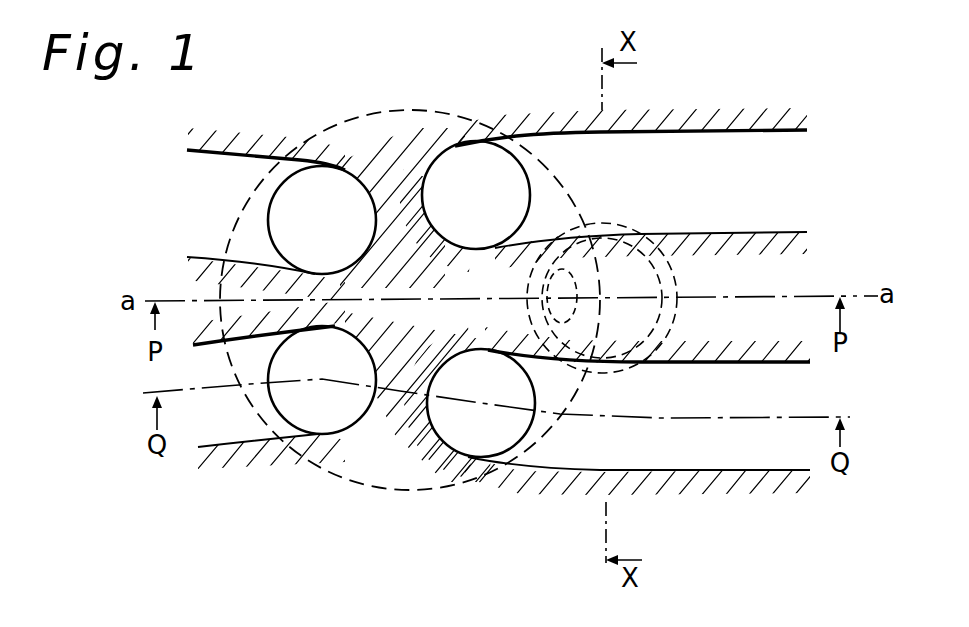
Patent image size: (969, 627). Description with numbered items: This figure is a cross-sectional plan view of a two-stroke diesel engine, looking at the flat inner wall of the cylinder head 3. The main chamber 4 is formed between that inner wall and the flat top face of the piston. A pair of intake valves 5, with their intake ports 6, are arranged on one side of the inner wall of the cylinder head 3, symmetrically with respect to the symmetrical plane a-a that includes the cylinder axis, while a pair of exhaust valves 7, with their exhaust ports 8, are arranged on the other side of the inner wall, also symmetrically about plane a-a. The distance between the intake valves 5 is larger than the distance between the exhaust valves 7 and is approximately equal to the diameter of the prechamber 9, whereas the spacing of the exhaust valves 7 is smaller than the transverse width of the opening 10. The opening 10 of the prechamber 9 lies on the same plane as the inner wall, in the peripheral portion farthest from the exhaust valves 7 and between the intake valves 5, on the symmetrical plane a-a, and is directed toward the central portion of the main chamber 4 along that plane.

The cylinder head 3 is at (260, 150).
The main chamber 4 is at (378, 472).
The intake valves 5 is at (472, 162).
The intake ports 6 is at (677, 153).
The exhaust valves 7 is at (327, 190).
The exhaust ports 8 is at (208, 182).
The prechamber 9 is at (648, 270).
The opening of the prechamber 10 is at (548, 292).